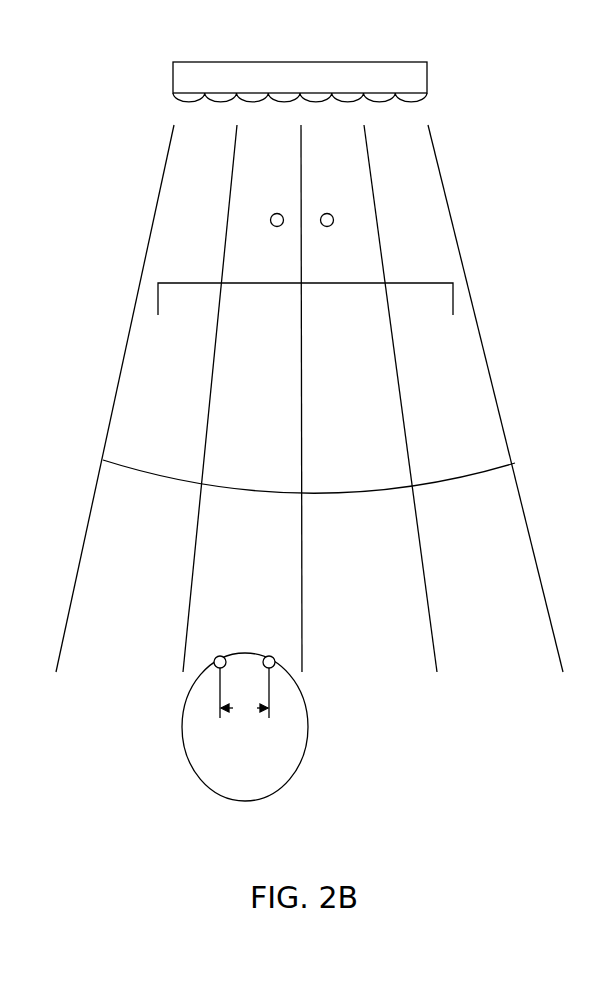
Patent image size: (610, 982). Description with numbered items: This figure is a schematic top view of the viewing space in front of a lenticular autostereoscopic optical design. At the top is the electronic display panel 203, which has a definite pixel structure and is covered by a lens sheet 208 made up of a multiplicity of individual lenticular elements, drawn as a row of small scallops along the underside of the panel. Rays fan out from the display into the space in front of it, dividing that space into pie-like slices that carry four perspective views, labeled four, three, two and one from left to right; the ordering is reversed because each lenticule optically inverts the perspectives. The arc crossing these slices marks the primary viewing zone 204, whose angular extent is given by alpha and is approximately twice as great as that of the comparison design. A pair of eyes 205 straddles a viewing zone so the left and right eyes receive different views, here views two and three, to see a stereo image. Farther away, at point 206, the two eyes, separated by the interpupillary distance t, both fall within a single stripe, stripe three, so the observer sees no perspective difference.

The electronic display panel 203 is at (427, 62).
The lens sheet 208 is at (427, 100).
The pair of eyes 205 is at (337, 283).
The primary viewing zone 204 is at (428, 488).
The point at a greater distance 206 is at (312, 717).